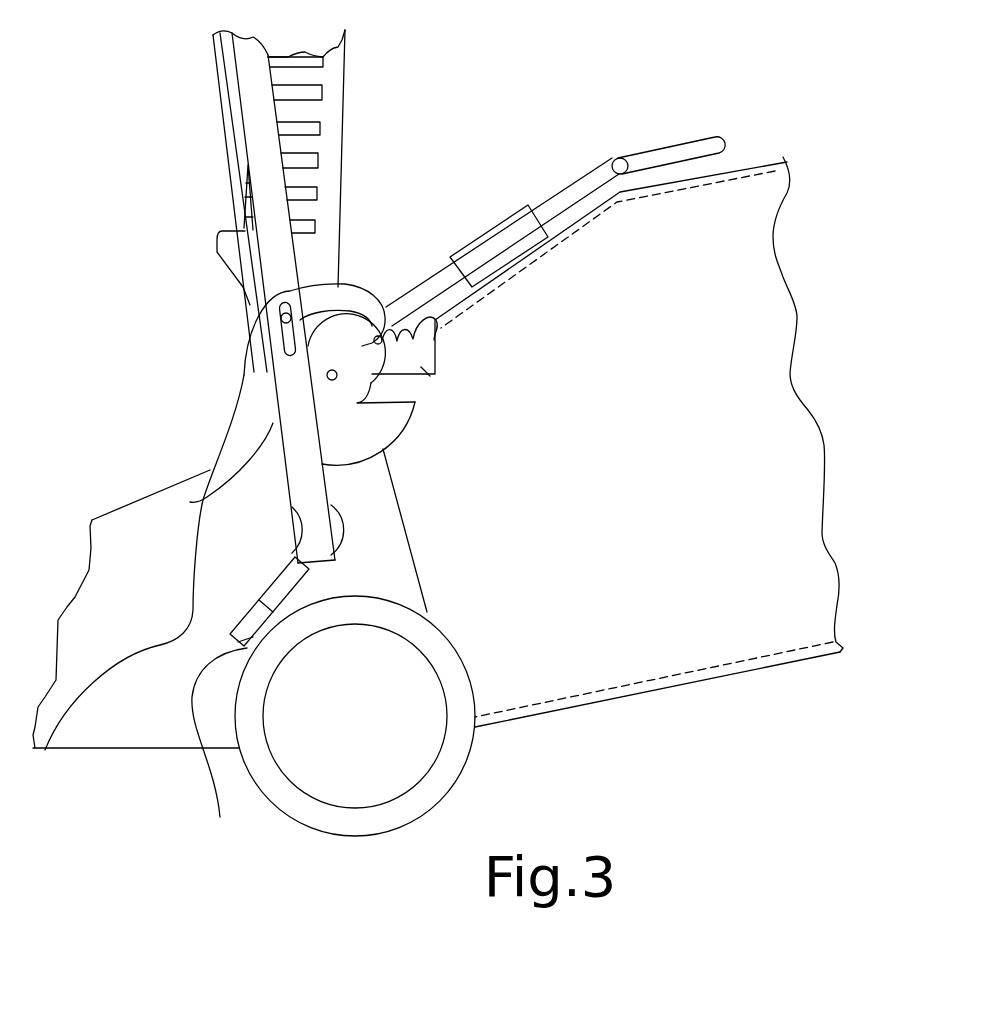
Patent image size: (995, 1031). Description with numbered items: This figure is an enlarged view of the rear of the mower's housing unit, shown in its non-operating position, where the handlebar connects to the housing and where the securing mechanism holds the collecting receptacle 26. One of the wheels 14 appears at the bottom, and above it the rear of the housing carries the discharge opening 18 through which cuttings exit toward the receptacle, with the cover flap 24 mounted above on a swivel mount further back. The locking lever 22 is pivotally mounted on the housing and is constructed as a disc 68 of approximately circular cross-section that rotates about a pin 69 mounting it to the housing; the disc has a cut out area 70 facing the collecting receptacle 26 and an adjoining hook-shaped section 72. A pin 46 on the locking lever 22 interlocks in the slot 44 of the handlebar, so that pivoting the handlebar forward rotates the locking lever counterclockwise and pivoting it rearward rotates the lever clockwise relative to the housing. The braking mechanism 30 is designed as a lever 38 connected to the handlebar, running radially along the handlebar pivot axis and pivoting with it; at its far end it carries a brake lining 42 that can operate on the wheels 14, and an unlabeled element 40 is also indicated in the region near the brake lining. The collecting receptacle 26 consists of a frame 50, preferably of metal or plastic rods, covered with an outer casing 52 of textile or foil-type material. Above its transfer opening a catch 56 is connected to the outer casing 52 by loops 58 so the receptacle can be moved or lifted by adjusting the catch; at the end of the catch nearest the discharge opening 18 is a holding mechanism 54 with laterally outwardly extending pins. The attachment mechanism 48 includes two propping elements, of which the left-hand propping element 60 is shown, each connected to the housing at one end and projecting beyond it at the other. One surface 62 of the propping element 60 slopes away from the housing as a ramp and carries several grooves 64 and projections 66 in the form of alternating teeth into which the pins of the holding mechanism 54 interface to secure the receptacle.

The wheels 14 is at (335, 756).
The discharge opening 18 is at (407, 575).
The locking lever 22 is at (250, 402).
The cover flap 24 is at (337, 82).
The collecting receptacle 26 is at (125, 566).
The braking mechanism 30 is at (210, 615).
The lever 38 is at (272, 592).
The bracket 40 is at (187, 707).
The brake lining 42 is at (219, 750).
The slot 44 is at (277, 378).
The pin 46 is at (280, 318).
The attachment mechanism 48 is at (423, 437).
The frame 50 is at (783, 157).
The outer casing 52 is at (590, 633).
The holding mechanism 54 is at (353, 310).
The catch 56 is at (672, 152).
The loops 58 is at (513, 233).
The propping element 60 is at (436, 376).
The surface 62 is at (406, 308).
The grooves 64 is at (422, 353).
The projections 66 is at (437, 308).
The disc 68 is at (200, 498).
The pin 69 is at (331, 369).
The cut out area 70 is at (428, 395).
The hook-shaped section 72 is at (328, 448).